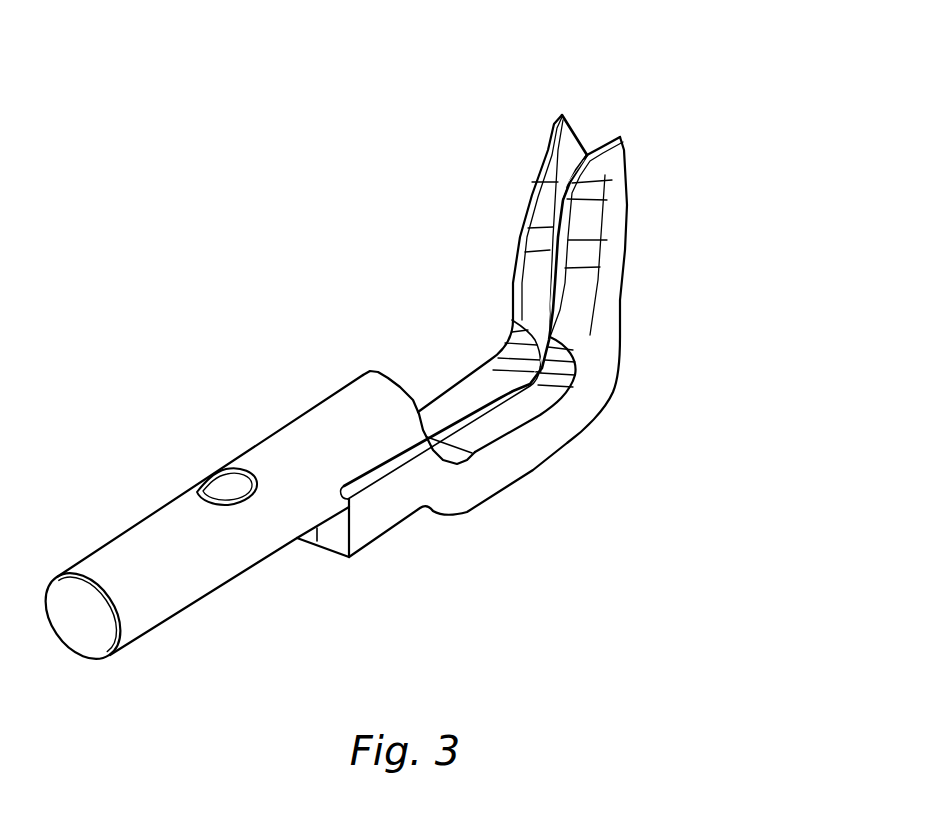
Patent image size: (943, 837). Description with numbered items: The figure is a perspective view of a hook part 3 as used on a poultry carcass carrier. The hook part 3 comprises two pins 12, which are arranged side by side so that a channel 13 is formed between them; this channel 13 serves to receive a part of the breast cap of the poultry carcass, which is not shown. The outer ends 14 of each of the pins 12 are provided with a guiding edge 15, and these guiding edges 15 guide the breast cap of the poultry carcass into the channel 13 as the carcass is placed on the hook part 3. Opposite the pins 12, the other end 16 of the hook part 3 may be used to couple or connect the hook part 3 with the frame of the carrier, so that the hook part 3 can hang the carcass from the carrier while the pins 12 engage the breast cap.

The hook part 3 is at (742, 142).
The pins 12 is at (527, 290).
The channel 13 is at (637, 87).
The outer ends 14 is at (562, 114).
The guiding edge 15 is at (570, 133).
The other end 16 is at (155, 537).